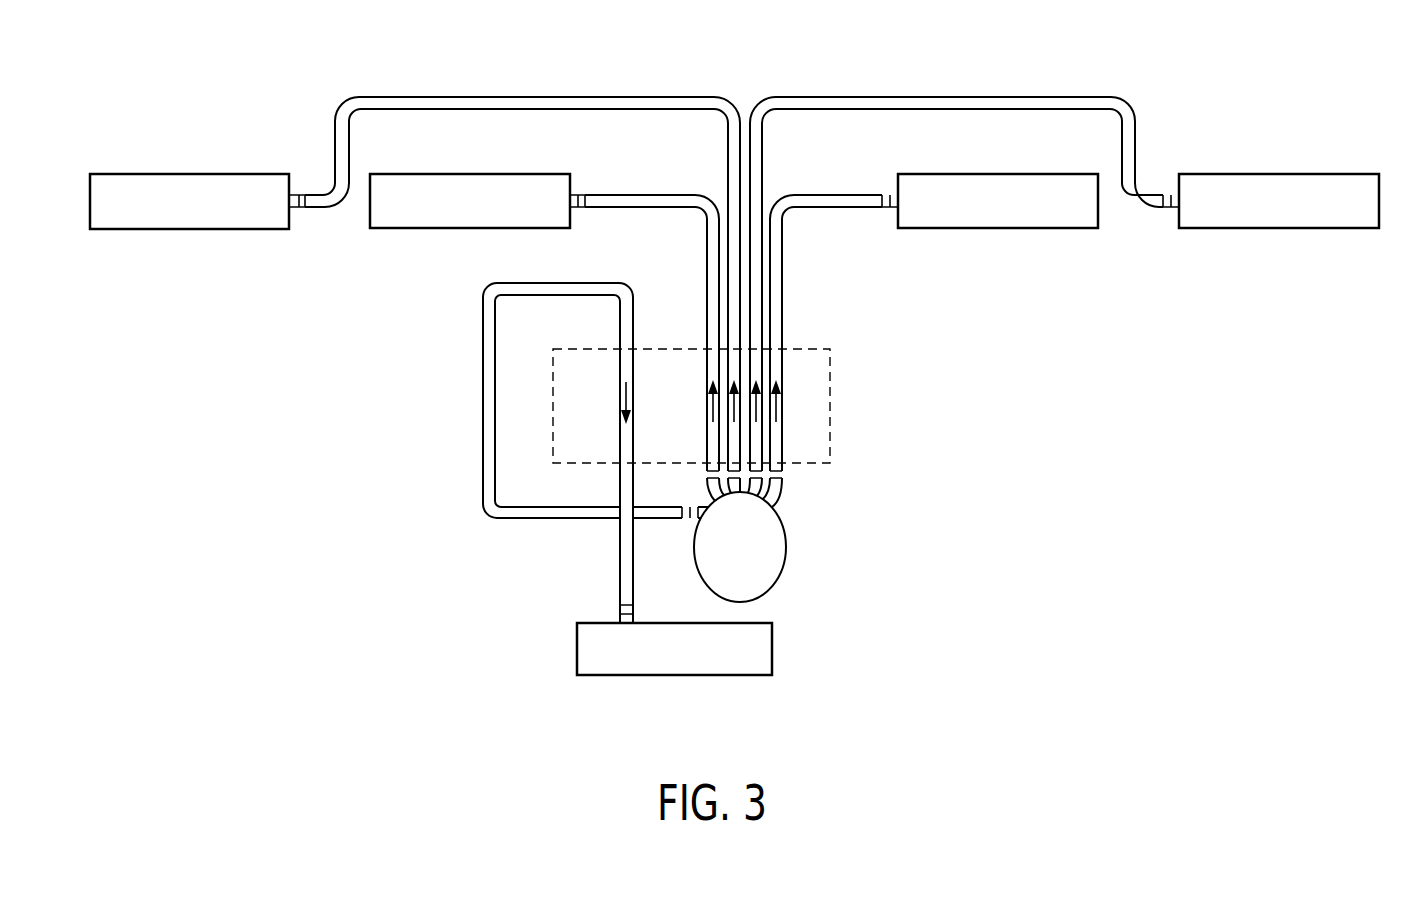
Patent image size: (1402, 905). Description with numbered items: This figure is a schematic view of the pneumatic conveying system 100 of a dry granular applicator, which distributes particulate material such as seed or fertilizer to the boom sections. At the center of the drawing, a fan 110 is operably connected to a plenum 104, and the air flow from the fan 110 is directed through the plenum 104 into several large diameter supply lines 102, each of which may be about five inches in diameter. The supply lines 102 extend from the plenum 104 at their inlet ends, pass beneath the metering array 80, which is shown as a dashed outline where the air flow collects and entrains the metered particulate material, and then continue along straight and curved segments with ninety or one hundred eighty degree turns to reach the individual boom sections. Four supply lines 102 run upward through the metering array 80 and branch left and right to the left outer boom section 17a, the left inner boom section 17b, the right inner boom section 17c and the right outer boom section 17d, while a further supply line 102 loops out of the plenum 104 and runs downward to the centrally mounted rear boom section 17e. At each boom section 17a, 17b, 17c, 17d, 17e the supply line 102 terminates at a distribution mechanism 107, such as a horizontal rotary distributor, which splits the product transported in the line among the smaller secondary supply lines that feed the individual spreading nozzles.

The conveying system 100 is at (278, 66).
The left outer boom section 17a is at (215, 185).
The left inner boom section 17b is at (498, 185).
The right inner boom section 17c is at (962, 185).
The right outer boom section 17d is at (1248, 185).
The rear boom section 17e is at (698, 660).
The large diameter supply line 102 is at (537, 100).
The distribution mechanism 107 is at (298, 195).
The plenum 104 is at (700, 507).
The fan 110 is at (770, 585).
The metering array 80 is at (831, 397).